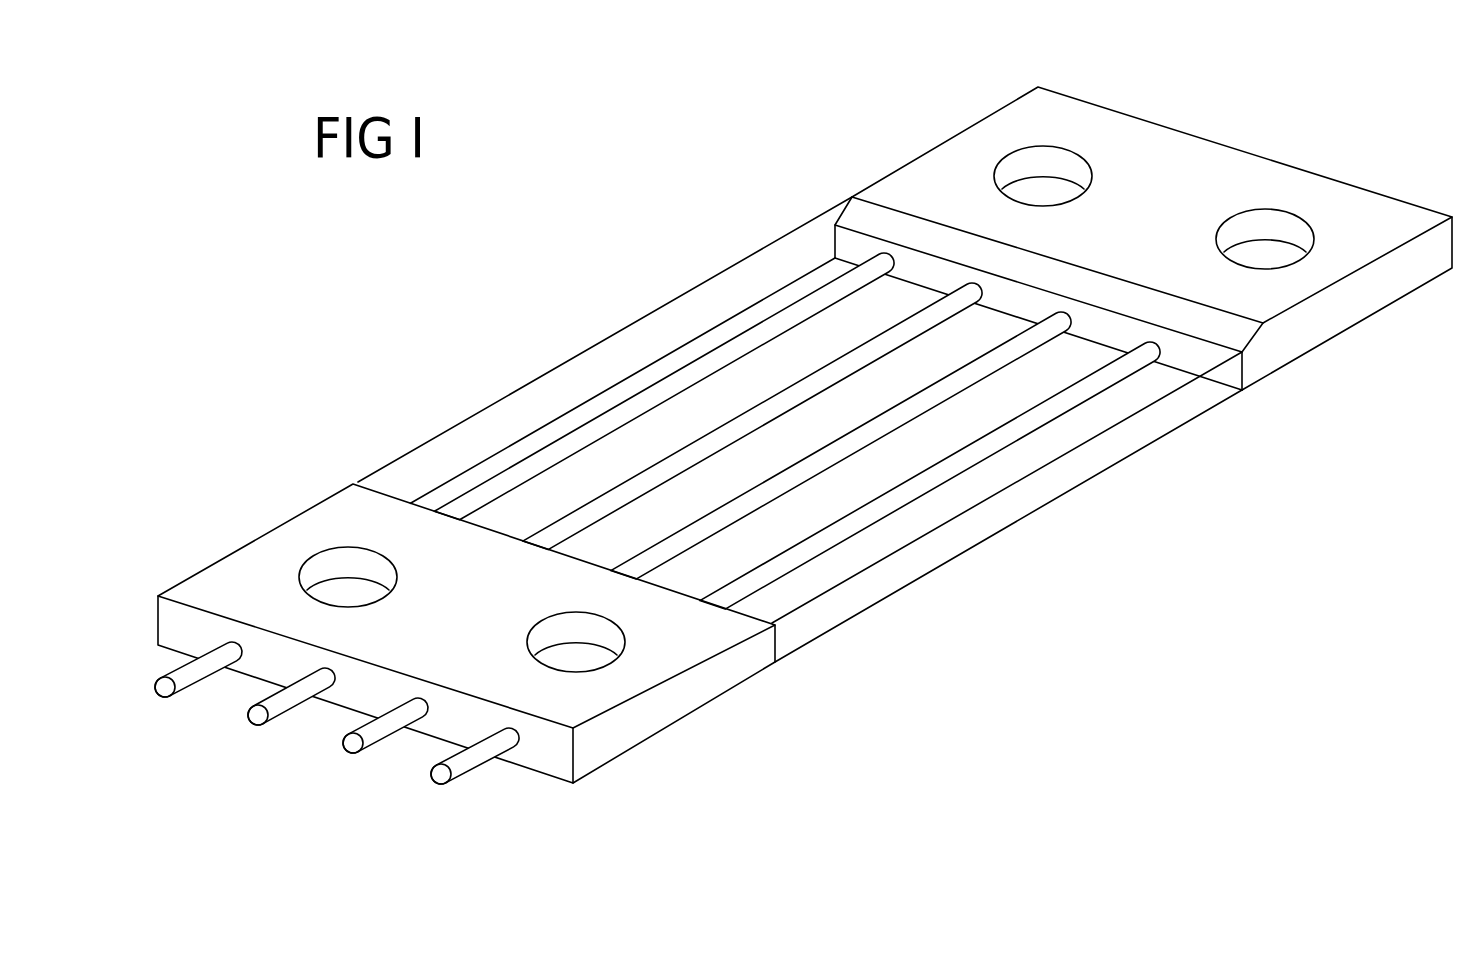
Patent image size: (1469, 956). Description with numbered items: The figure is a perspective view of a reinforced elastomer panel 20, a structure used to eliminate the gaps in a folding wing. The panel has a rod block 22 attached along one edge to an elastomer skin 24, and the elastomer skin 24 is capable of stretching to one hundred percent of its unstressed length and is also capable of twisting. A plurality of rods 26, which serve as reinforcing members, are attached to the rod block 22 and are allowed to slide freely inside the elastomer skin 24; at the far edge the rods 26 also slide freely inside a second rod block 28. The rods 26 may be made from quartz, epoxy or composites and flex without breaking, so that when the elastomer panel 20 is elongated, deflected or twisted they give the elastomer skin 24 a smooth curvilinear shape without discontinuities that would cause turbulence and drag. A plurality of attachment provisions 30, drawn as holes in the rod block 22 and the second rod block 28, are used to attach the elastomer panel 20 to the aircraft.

The reinforced elastomer panel 20 is at (617, 201).
The rod block 22 is at (898, 185).
The elastomer skin 24 is at (1125, 437).
The rods 26 is at (762, 402).
The second rod block 28 is at (312, 510).
The attachment provisions 30 is at (1007, 157).